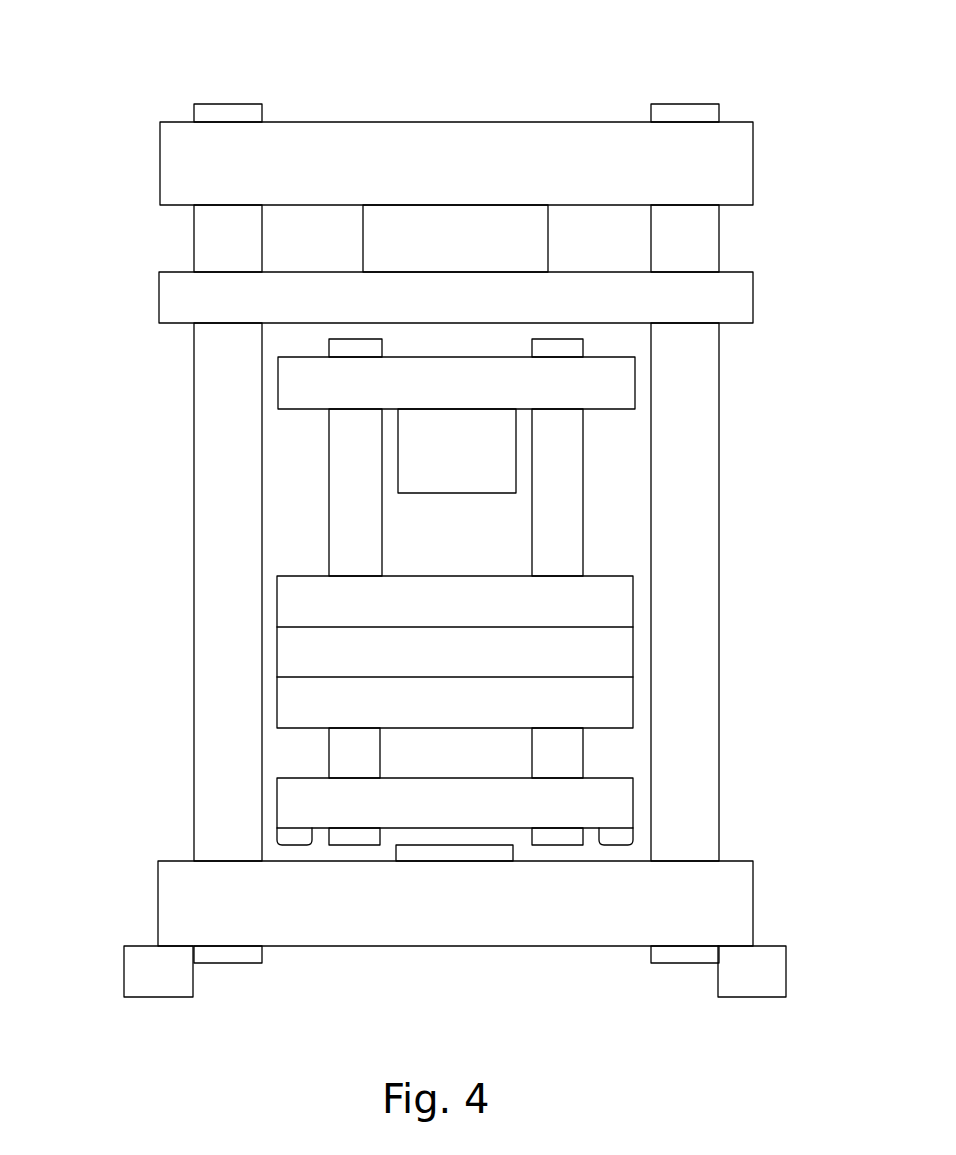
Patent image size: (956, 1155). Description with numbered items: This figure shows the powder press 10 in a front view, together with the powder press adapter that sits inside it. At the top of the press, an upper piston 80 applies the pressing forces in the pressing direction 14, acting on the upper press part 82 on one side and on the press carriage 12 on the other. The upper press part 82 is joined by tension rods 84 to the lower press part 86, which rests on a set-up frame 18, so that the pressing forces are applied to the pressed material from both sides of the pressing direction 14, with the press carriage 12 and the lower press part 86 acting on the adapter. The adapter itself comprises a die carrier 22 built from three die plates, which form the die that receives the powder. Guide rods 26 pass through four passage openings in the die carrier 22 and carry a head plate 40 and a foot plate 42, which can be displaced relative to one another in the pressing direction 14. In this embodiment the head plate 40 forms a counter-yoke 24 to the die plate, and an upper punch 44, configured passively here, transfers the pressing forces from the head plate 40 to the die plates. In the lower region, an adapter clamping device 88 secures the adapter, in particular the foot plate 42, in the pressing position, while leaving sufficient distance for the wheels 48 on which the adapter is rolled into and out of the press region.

The powder press 10 is at (152, 75).
The press carriage 12 is at (180, 292).
The pressing direction 14 is at (456, 207).
The set-up frame 18 is at (143, 978).
The die carrier 22 is at (163, 643).
The counter-yoke 24 is at (290, 367).
The guide rods 26 is at (355, 438).
The head plate 40 is at (295, 387).
The foot plate 42 is at (293, 797).
The upper punch 44 is at (433, 467).
The wheels 48 is at (287, 838).
The upper piston 80 is at (528, 250).
The upper press part 82 is at (182, 157).
The tension rods 84 is at (237, 110).
The lower press part 86 is at (190, 918).
The adapter clamping device 88 is at (448, 853).